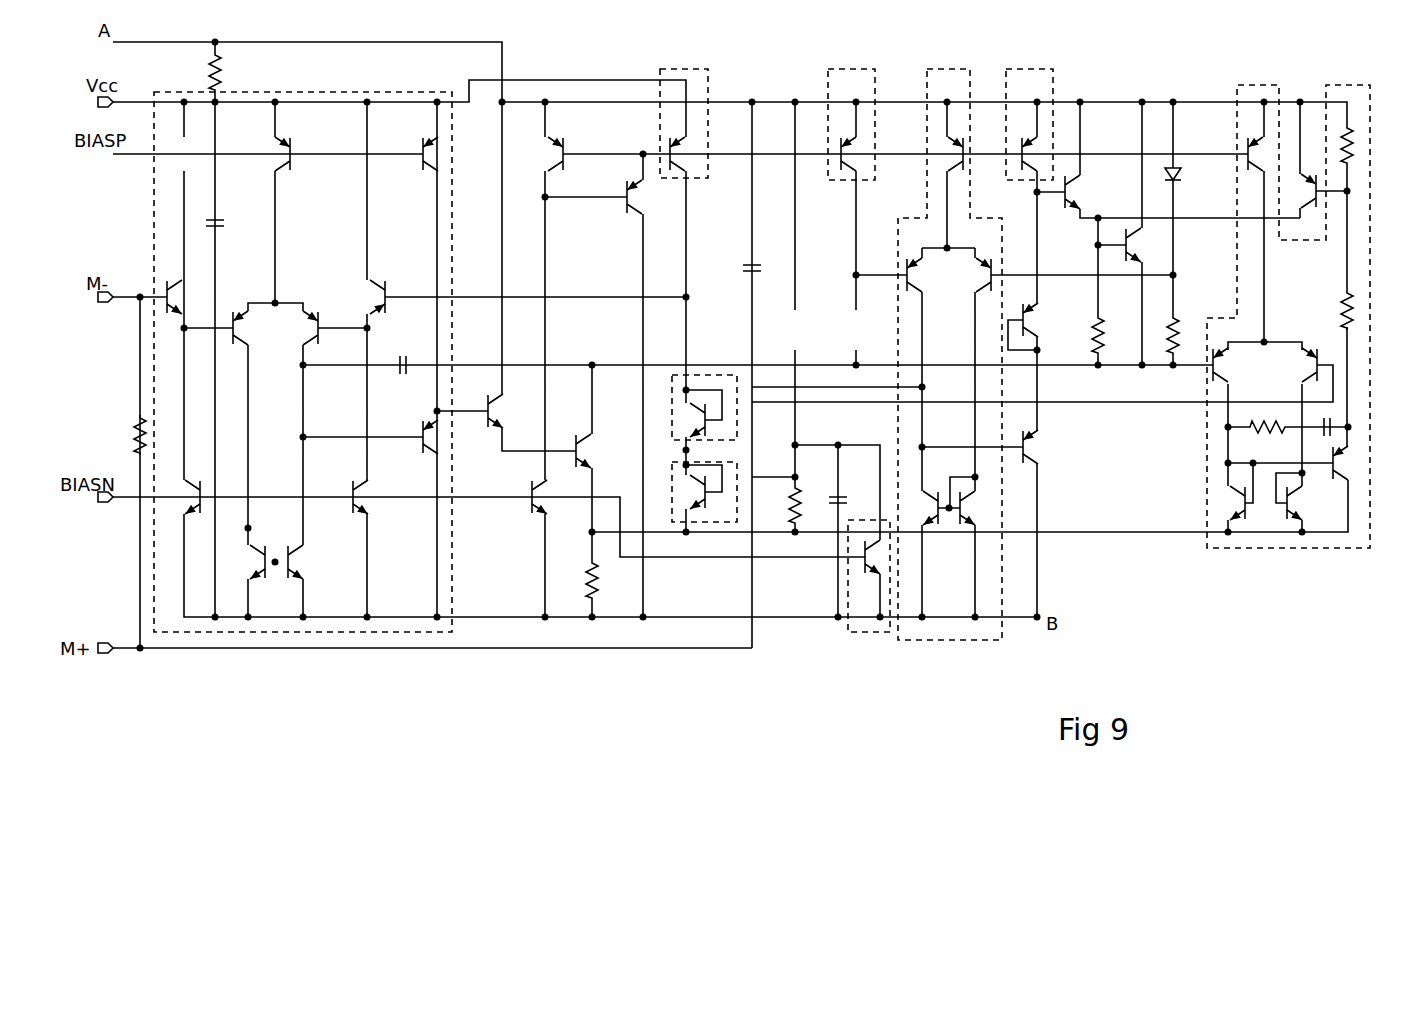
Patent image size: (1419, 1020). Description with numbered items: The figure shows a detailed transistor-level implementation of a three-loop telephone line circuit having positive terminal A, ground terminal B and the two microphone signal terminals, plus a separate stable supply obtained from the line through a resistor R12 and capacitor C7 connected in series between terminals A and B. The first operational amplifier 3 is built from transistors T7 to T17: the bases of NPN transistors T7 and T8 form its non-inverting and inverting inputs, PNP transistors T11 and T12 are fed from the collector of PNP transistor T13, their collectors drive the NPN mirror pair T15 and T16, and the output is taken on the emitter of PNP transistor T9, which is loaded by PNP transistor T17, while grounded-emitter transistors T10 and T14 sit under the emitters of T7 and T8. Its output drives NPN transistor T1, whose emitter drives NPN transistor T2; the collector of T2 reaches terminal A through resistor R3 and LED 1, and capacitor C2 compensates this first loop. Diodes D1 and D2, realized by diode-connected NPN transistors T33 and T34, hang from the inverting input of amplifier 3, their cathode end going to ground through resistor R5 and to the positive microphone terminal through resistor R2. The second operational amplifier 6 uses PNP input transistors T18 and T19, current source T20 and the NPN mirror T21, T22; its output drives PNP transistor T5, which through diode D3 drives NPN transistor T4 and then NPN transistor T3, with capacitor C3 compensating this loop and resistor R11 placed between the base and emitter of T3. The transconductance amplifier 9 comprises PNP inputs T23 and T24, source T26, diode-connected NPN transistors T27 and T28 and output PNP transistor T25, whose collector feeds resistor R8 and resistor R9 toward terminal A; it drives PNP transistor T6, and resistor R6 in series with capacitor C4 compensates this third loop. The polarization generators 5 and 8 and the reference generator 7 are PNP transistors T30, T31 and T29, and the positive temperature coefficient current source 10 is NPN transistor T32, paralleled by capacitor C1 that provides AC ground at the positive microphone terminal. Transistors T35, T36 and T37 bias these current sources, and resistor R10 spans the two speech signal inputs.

The LED 1 is at (1183, 172).
The first operational amplifier A1 3 is at (272, 634).
The first polarization current generator 5 is at (682, 68).
The second operational amplifier A2 6 is at (940, 642).
The reference current generator 7 is at (842, 68).
The second polarization current generator 8 is at (1030, 68).
The transconductance amplifier gm 9 is at (1270, 552).
The positive temperature coefficient current source 10 is at (858, 634).
The NPN transistor T1 is at (507, 411).
The NPN transistor T2 is at (596, 451).
The NPN transistor T3 is at (1146, 245).
The NPN transistor T4 is at (1085, 192).
The PNP transistor T5 is at (1043, 447).
The PNP transistor T6 is at (1295, 191).
The NPN transistor T7 is at (188, 297).
The NPN transistor T8 is at (362, 297).
The PNP transistor T9 is at (441, 437).
The NPN transistor T10 is at (172, 494).
The PNP transistor T11 is at (257, 328).
The PNP transistor T12 is at (330, 332).
The PNP transistor T13 is at (264, 151).
The NPN transistor T14 is at (379, 493).
The NPN transistor T15 is at (268, 574).
The NPN transistor T16 is at (312, 562).
The PNP transistor T17 is at (410, 156).
The PNP transistor T18 is at (1002, 271).
The PNP transistor T19 is at (930, 275).
The PNP transistor T20 is at (936, 156).
The NPN transistor T21 is at (984, 508).
The NPN transistor T22 is at (913, 508).
The PNP transistor T23 is at (1291, 365).
The PNP transistor T24 is at (1199, 372).
The PNP transistor T25 is at (1358, 463).
The PNP transistor T26 is at (1272, 154).
The NPN transistor T27 is at (1313, 503).
The NPN transistor T28 is at (1218, 503).
The PNP transistor T29 is at (868, 151).
The PNP transistor T30 is at (697, 151).
The PNP transistor T31 is at (1049, 151).
The NPN transistor T32 is at (890, 557).
The NPN transistor T33 is at (678, 420).
The NPN transistor T34 is at (678, 492).
The PNP transistor T35 is at (538, 154).
The PNP transistor T36 is at (652, 197).
The NPN transistor T37 is at (518, 501).
The resistor R2 is at (779, 505).
The resistor R3 is at (1188, 335).
The resistor R5 is at (606, 580).
The resistor R6 is at (1268, 437).
The resistor R8 is at (1330, 310).
The resistor R9 is at (1361, 145).
The resistor R10 is at (117, 435).
The resistor R11 is at (1077, 335).
The resistor R12 is at (234, 72).
The capacitor C1 is at (849, 489).
The capacitor C2 is at (402, 375).
The capacitor C3 is at (738, 258).
The capacitor C4 is at (1320, 437).
The capacitor C7 is at (228, 234).
The diode D1 is at (722, 372).
The diode D2 is at (738, 478).
The diode D3 is at (1041, 320).